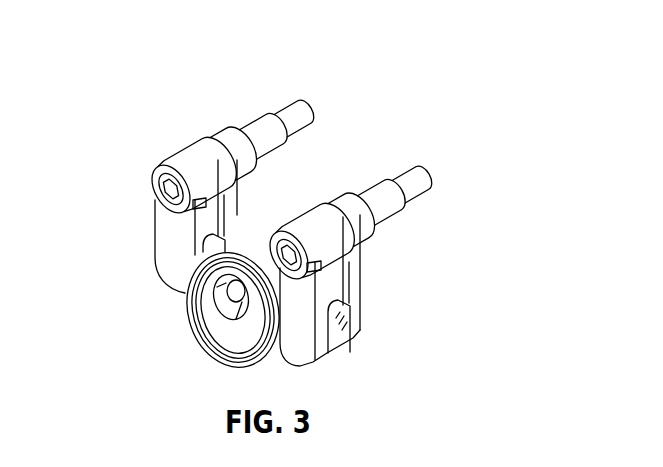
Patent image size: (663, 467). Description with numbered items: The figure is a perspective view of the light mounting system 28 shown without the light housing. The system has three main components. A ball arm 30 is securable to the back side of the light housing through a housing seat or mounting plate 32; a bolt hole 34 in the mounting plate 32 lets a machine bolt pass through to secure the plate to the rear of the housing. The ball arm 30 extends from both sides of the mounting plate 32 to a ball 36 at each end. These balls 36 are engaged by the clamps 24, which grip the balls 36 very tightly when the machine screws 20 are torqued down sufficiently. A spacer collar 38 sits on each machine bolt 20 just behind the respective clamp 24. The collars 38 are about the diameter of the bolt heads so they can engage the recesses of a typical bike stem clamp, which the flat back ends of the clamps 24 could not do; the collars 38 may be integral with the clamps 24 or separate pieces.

The machine screw 20 is at (182, 173).
The clamp 24 is at (170, 243).
The mounting system 28 is at (438, 105).
The ball arm 30 is at (160, 370).
The mounting plate 32 is at (243, 362).
The bolt hole 34 is at (222, 298).
The ball 36 is at (215, 243).
The spacer collar 38 is at (248, 133).